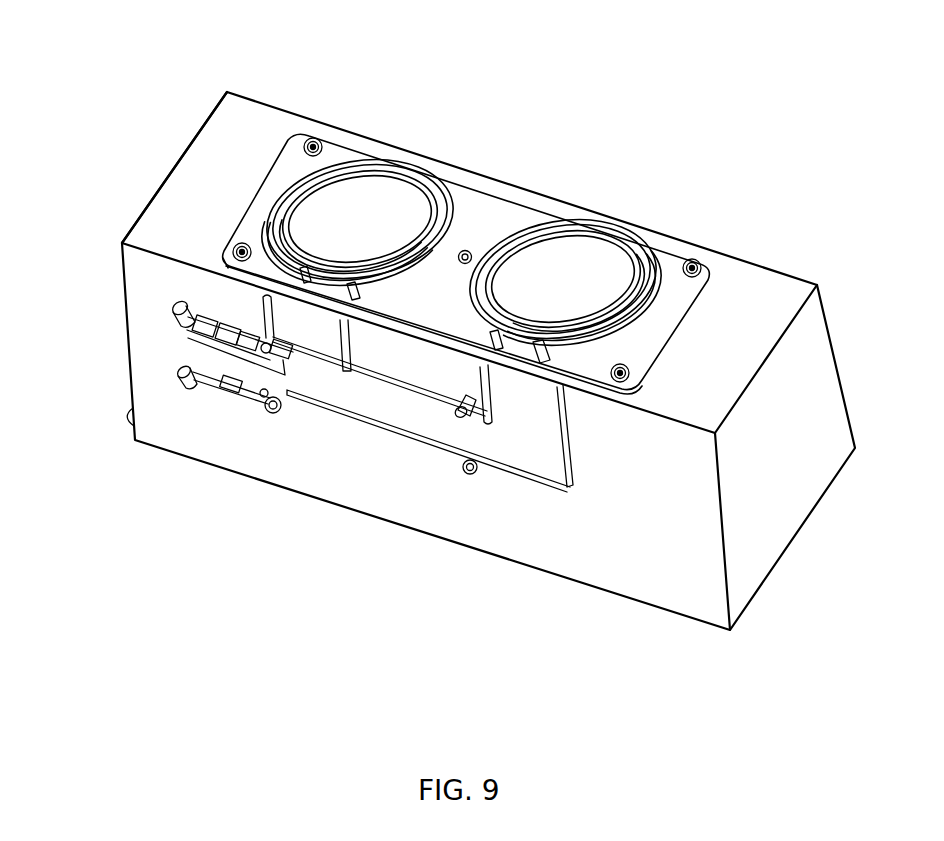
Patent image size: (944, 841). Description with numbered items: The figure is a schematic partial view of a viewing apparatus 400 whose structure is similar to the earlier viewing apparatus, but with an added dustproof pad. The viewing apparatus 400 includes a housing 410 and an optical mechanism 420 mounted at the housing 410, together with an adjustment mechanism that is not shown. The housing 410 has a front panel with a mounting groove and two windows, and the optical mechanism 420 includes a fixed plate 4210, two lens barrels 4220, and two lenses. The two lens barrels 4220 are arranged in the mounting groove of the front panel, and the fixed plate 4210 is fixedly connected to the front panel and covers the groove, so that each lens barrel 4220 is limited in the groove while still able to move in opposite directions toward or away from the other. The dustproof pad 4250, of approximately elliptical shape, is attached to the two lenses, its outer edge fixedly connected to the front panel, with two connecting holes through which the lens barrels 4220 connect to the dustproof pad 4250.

The viewing apparatus 400 is at (682, 34).
The housing 410 is at (128, 228).
The optical mechanism 420 is at (385, 66).
The dustproof pad 4250 is at (263, 190).
The fixed plate 4210 is at (300, 160).
The lens barrel 4220 is at (363, 177).